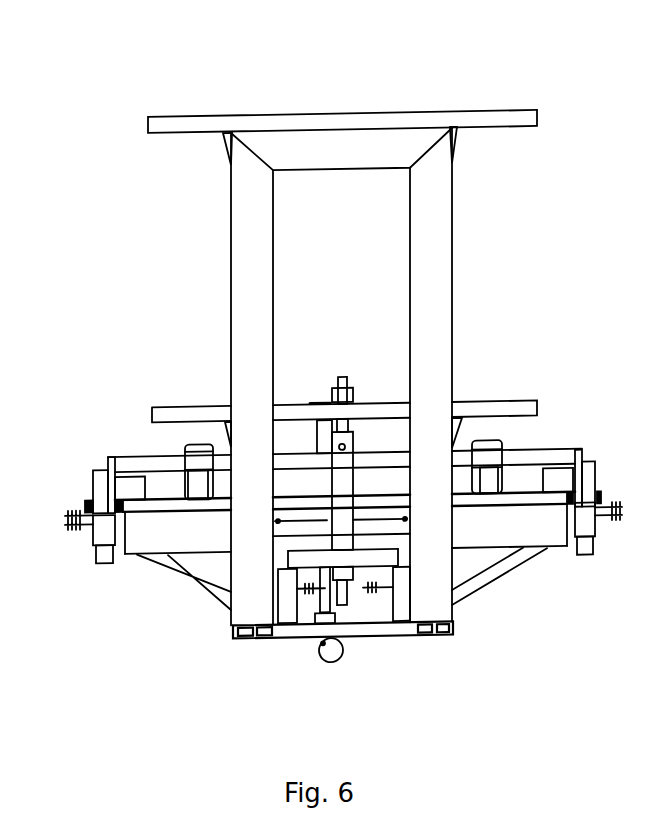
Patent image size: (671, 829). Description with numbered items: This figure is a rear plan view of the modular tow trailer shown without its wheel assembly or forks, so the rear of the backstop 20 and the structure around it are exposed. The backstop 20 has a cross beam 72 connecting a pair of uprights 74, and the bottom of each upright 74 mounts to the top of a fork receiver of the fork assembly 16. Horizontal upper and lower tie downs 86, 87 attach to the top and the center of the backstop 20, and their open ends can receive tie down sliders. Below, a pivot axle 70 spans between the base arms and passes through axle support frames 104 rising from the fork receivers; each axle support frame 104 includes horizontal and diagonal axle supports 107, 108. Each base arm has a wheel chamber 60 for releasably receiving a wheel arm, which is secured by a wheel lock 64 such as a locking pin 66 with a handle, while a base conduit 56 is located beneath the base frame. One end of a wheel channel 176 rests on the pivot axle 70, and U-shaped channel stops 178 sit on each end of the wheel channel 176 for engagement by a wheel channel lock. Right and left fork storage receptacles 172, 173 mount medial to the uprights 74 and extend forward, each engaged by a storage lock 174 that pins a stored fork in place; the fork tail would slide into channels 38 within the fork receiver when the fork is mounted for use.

The fork assembly 16 is at (302, 635).
The backstop 20 is at (245, 220).
The channels 38 is at (245, 642).
The base conduit 56 is at (590, 553).
The wheel chamber 60 is at (613, 487).
The wheel lock 64 is at (85, 522).
The locking pin 66 is at (620, 525).
The pivot axle 70 is at (157, 507).
The cross beam 72 is at (302, 140).
The uprights 74 is at (435, 253).
The upper tie down 86 is at (382, 116).
The lower tie down 87 is at (290, 403).
The axle support frames 104 is at (148, 535).
The horizontal axle support 107 is at (537, 533).
The diagonal axle support 108 is at (185, 572).
The right fork storage receptacle 172 is at (293, 630).
The left fork storage receptacle 173 is at (400, 630).
The storage lock 174 is at (377, 597).
The wheel channel 176 is at (492, 492).
The channel stops 178 is at (476, 439).